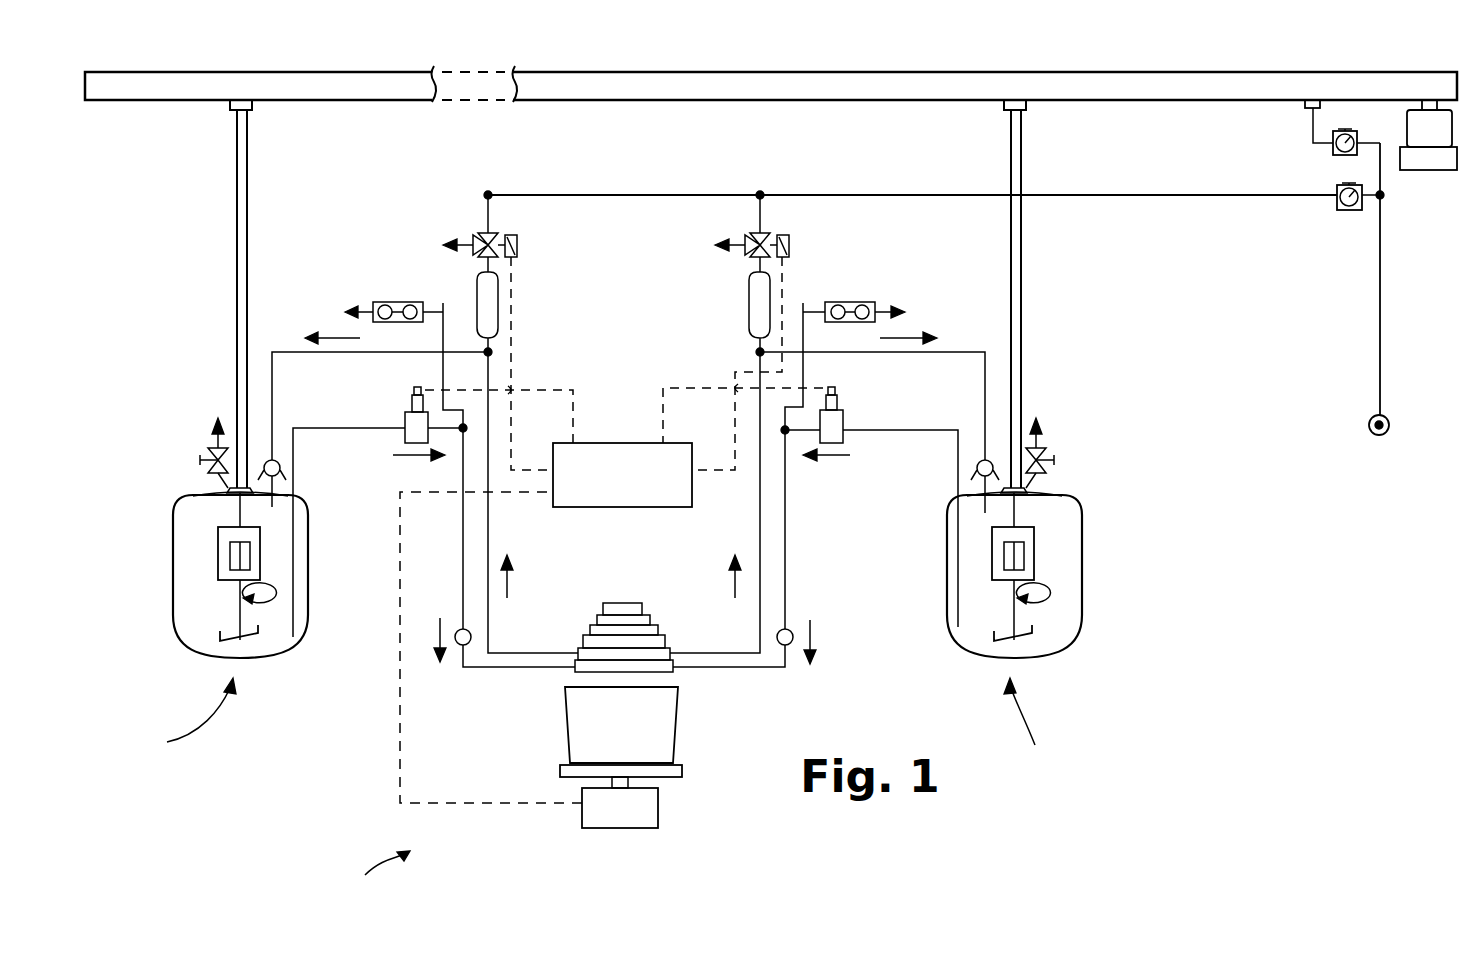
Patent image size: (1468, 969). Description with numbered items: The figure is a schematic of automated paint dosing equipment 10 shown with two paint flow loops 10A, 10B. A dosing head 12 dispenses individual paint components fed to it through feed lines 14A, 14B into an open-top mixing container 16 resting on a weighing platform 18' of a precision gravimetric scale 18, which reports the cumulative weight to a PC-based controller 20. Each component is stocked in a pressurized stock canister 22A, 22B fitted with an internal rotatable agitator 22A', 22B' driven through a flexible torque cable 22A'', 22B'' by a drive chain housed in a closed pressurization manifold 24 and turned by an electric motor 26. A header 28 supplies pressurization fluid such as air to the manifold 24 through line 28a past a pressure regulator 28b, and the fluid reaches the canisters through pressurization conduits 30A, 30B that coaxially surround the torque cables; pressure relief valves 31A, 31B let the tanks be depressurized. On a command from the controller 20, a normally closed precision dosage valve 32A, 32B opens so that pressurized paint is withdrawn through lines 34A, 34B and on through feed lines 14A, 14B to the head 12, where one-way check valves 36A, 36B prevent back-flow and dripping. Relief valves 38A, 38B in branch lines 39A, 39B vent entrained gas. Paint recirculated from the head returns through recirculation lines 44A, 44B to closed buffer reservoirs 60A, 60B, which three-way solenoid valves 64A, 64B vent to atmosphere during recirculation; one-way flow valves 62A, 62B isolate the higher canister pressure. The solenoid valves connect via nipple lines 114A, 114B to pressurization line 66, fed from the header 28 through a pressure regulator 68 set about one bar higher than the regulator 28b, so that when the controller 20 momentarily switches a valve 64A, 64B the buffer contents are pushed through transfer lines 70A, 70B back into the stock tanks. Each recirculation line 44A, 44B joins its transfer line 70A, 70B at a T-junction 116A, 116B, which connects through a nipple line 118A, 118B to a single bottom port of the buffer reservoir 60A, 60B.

The automated dosing equipment 10 is at (372, 865).
The paint flow loop 10A is at (186, 710).
The paint flow loop 10B is at (1044, 711).
The dosing head 12 is at (620, 607).
The feed line 14A is at (484, 673).
The feed line 14B is at (748, 673).
The mixing container 16 is at (621, 725).
The gravimetric scale 18 is at (529, 660).
The weighing platform 18' is at (653, 778).
The PC-based controller 20 is at (622, 475).
The stock canister 22A is at (205, 573).
The rotatable agitator 22A' is at (286, 658).
The flexible torque cable 22A'' is at (205, 490).
The stock canister 22B is at (1058, 573).
The rotatable agitator 22B' is at (1064, 650).
The flexible torque cable 22B'' is at (1063, 478).
The pressurization manifold 24 is at (782, 72).
The electric motor 26 is at (1436, 168).
The header 28 is at (1370, 420).
The line 28a is at (1382, 331).
The pressure regulator 28b is at (1333, 143).
The pressurization conduit 30A is at (242, 213).
The pressurization conduit 30B is at (1023, 150).
The pressure relief valve 31A is at (212, 448).
The pressure relief valve 31B is at (1040, 448).
The precision dosage valve 32A is at (410, 420).
The precision dosage valve 32B is at (845, 423).
The line 34A is at (313, 428).
The line 34B is at (923, 430).
The one-way check valve 36A is at (460, 629).
The one-way check valve 36B is at (795, 633).
The relief valve 38A is at (395, 302).
The relief valve 38B is at (858, 302).
The branch line 39A is at (443, 312).
The branch line 39B is at (803, 305).
The recirculation line 44A is at (489, 526).
The recirculation line 44B is at (763, 511).
The buffer reservoir 60A is at (490, 312).
The buffer reservoir 60B is at (753, 297).
The one-way flow valve 62A is at (280, 473).
The one-way flow valve 62B is at (975, 474).
The three-way solenoid valve 64A is at (482, 240).
The three-way solenoid valve 64B is at (750, 238).
The pressurization line 66 is at (615, 199).
The pressure regulator 68 is at (1343, 213).
The transfer line 70A is at (288, 348).
The transfer line 70B is at (948, 350).
The nipple line 114A is at (488, 210).
The nipple line 114B is at (762, 207).
The T-junction 116A is at (495, 353).
The T-junction 116B is at (756, 353).
The nipple line 118A is at (493, 340).
The nipple line 118B is at (757, 340).